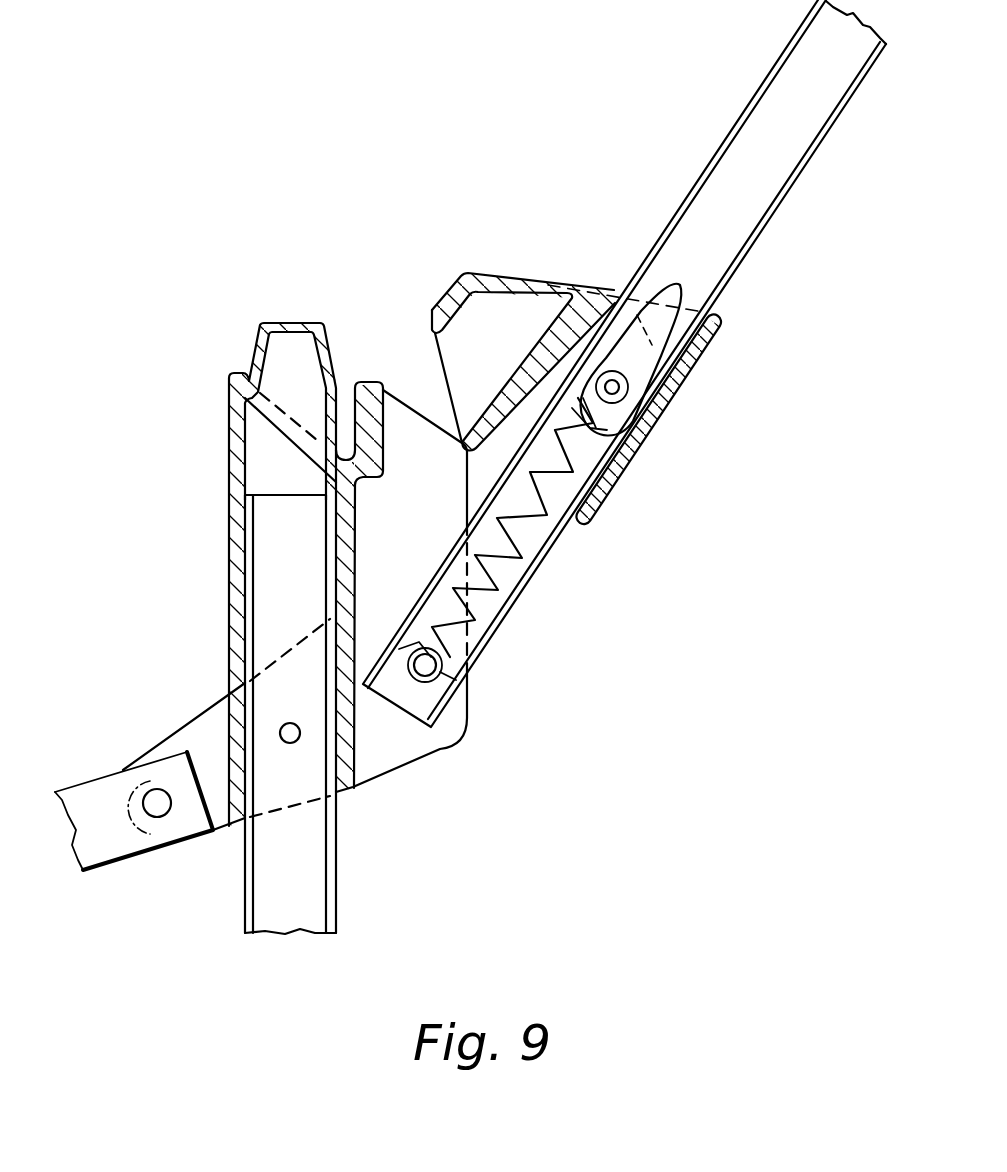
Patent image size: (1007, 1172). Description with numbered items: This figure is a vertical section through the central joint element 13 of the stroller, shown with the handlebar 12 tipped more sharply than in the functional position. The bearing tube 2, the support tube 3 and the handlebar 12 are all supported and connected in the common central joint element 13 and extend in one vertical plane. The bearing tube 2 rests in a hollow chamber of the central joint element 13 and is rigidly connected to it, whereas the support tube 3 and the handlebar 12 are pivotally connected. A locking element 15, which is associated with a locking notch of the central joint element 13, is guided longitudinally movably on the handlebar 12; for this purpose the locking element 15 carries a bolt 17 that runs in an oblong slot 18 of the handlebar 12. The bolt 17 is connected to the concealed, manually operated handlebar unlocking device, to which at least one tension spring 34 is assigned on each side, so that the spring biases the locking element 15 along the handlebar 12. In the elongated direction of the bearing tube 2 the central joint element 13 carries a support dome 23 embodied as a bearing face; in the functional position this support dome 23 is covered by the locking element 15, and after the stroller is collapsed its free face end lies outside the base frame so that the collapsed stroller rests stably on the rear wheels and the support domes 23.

The bearing tube 2 is at (305, 885).
The support tube 3 is at (107, 843).
The handlebar 12 is at (810, 164).
The central joint element 13 is at (422, 743).
The locking element 15 is at (440, 298).
The bolt 17 is at (633, 402).
The oblong slot 18 is at (655, 356).
The support dome 23 is at (275, 320).
The tension spring 34 is at (470, 612).